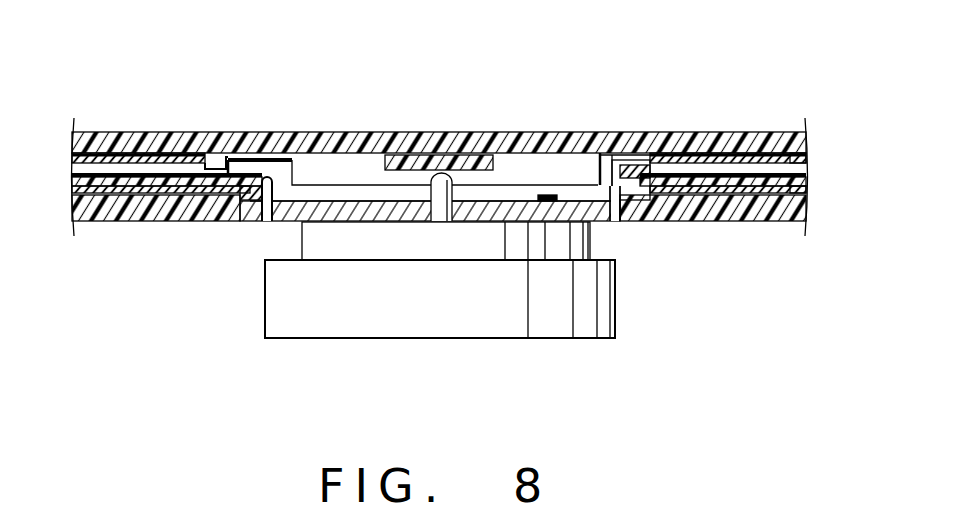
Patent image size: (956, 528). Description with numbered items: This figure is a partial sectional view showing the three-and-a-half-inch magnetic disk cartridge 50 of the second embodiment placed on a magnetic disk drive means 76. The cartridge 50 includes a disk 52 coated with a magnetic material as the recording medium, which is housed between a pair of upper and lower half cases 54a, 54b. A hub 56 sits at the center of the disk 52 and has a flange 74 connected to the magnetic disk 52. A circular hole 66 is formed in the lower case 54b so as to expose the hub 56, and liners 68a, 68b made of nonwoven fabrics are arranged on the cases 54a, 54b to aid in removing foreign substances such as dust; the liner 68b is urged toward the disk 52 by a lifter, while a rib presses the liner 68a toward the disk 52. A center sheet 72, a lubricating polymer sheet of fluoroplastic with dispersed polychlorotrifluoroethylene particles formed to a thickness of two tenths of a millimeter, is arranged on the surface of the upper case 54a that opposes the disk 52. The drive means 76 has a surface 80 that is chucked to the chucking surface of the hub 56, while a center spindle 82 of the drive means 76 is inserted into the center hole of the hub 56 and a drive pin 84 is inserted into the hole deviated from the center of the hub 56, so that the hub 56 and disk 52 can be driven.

The magnetic disk cartridge 50 is at (104, 84).
The disk 52 is at (150, 163).
The upper half case 54a is at (755, 148).
The lower half case 54b is at (752, 218).
The hub 56 is at (352, 195).
The circular hole 66 is at (262, 225).
The liner 68a is at (810, 158).
The liner 68b is at (807, 212).
The center sheet 72 is at (470, 160).
The flange 74 is at (244, 192).
The magnetic disk drive means 76 is at (278, 303).
The surface 80 is at (520, 222).
The center spindle 82 is at (442, 178).
The drive pin 84 is at (551, 194).